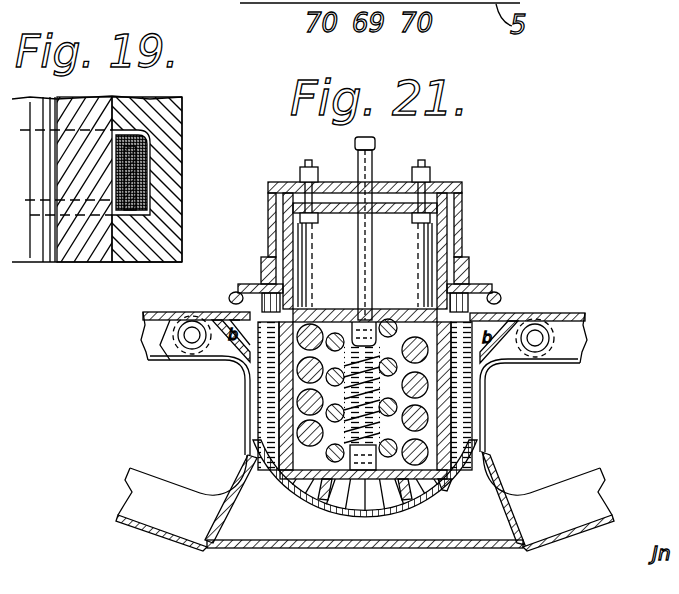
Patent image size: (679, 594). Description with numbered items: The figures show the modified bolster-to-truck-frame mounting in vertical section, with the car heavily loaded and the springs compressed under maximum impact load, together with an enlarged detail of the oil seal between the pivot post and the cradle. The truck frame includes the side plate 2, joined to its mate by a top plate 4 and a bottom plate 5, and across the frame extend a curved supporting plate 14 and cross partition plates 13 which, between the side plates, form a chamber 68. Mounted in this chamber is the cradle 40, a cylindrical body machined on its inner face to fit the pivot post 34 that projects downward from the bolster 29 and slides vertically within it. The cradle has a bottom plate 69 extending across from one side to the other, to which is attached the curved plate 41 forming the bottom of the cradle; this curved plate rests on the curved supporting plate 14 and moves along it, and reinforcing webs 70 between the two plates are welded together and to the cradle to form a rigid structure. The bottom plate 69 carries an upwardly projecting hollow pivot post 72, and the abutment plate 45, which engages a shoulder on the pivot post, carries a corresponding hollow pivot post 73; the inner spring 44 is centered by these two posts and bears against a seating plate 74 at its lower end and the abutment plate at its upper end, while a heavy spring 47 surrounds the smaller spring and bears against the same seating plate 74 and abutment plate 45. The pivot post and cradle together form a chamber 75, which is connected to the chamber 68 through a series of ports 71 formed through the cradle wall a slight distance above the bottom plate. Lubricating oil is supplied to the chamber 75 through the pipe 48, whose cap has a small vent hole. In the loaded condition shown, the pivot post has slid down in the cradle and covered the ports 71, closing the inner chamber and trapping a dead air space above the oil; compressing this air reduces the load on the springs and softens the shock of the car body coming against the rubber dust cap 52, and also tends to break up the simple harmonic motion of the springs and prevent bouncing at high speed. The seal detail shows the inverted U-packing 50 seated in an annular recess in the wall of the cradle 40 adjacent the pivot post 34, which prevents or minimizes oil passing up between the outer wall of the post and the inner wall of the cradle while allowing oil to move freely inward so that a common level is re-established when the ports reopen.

In FIG. 21, the side plate 2 is at (565, 342).
In FIG. 21, the top plate 4 is at (530, 315).
In FIG. 21, the bottom plate 5 is at (495, 548).
In FIG. 21, the cross partition plate 13 is at (480, 437).
In FIG. 21, the curved supporting plate 14 is at (446, 494).
In FIG. 21, the bolster 29 is at (463, 212).
In FIG. 19, the pivot post 34 is at (80, 240).
In FIG. 21, the pivot post 34 is at (447, 243).
In FIG. 19, the cradle 40 is at (152, 122).
In FIG. 21, the cradle 40 is at (451, 388).
In FIG. 21, the curved plate 41 is at (300, 497).
In FIG. 21, the inner spring 44 is at (293, 388).
In FIG. 21, the abutment plate 45 is at (395, 320).
In FIG. 21, the heavy spring 47 is at (297, 410).
In FIG. 21, the pipe 48 is at (358, 247).
In FIG. 19, the U-packing 50 is at (148, 165).
In FIG. 21, the rubber dust cap 52 is at (460, 322).
In FIG. 21, the chamber 68 is at (476, 291).
In FIG. 21, the bottom plate 69 is at (365, 522).
In FIG. 21, the reinforcing web 70 is at (345, 520).
In FIG. 21, the port 71 is at (297, 447).
In FIG. 21, the hollow pivot post 72 is at (314, 498).
In FIG. 21, the hollow pivot post 73 is at (372, 320).
In FIG. 21, the seating plate 74 is at (416, 500).
In FIG. 21, the chamber 75 is at (323, 320).